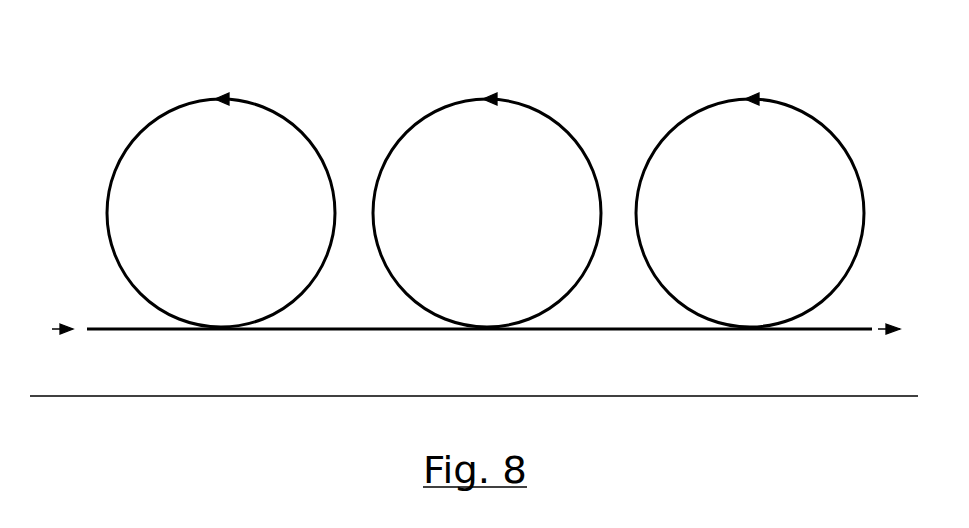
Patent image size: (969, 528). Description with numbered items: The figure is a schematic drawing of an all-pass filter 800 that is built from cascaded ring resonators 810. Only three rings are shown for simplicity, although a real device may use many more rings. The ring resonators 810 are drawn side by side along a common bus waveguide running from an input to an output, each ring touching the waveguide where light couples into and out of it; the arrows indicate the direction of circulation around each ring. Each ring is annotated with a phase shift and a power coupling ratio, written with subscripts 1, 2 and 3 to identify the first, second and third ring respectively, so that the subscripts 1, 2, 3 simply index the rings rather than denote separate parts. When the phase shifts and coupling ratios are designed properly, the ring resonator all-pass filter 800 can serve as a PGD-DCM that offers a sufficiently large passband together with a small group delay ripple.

The all-pass filter 800 is at (410, 62).
The ring resonators 810 is at (485, 288).
The first ring resonator (phase phi-1, coupling kappa-1) 1 is at (221, 210).
The second ring resonator (phase phi-2, coupling kappa-2) 2 is at (487, 210).
The third ring resonator (phase phi-3, coupling kappa-3) 3 is at (750, 210).